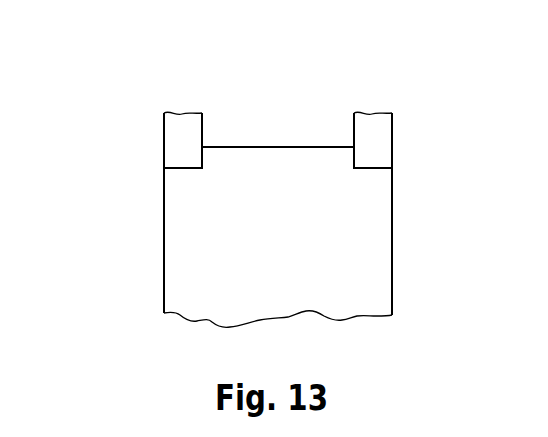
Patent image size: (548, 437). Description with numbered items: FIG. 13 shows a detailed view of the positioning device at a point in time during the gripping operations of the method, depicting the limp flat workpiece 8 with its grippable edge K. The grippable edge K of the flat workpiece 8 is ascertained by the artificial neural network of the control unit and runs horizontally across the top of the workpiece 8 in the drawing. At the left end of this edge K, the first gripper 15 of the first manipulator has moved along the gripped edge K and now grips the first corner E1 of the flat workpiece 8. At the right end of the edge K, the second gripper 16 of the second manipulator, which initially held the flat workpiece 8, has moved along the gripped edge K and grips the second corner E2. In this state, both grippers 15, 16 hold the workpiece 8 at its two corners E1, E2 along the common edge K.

The flat workpiece 8 is at (326, 183).
The first gripper 15 is at (188, 125).
The second gripper 16 is at (378, 125).
The first corner E1 is at (164, 146).
The second corner E2 is at (392, 146).
The grippable edge K is at (279, 145).